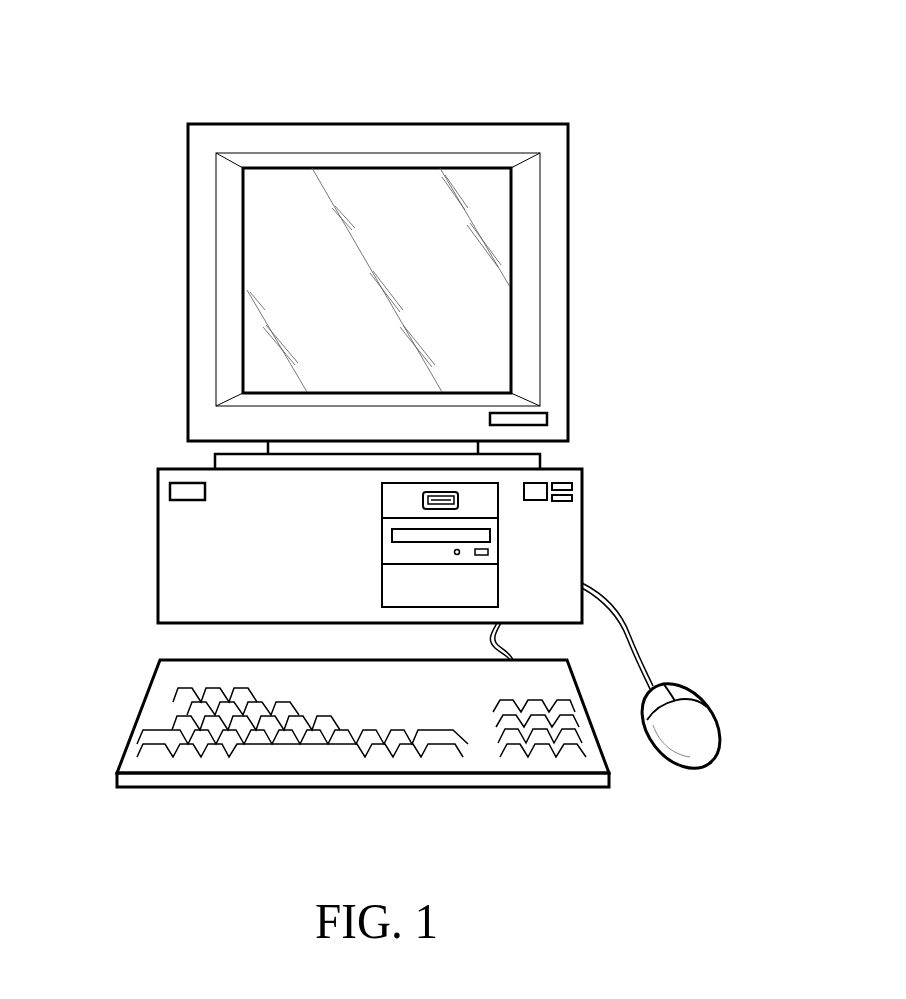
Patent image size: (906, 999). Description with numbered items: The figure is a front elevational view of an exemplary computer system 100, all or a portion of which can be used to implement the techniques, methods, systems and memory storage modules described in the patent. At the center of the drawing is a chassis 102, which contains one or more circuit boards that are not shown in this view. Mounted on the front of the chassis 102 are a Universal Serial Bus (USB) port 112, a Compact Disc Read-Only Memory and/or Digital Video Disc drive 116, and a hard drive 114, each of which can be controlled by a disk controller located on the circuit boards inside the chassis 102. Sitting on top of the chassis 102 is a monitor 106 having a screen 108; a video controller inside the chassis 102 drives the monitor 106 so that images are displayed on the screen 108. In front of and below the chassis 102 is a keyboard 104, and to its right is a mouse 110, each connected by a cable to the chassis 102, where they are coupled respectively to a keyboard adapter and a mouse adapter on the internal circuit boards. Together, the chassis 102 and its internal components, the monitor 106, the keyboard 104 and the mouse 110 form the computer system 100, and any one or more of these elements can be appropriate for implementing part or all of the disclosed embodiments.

The computer system 100 is at (566, 91).
The chassis 102 is at (158, 547).
The keyboard 104 is at (142, 712).
The monitor 106 is at (262, 123).
The screen 108 is at (290, 288).
The mouse 110 is at (700, 717).
The Universal Serial Bus (USB) port 112 is at (460, 495).
The hard drive 114 is at (492, 583).
The Compact Disc Read-Only Memory (CD-ROM) and/or Digital Video Disc (DVD) drive 116 is at (490, 540).